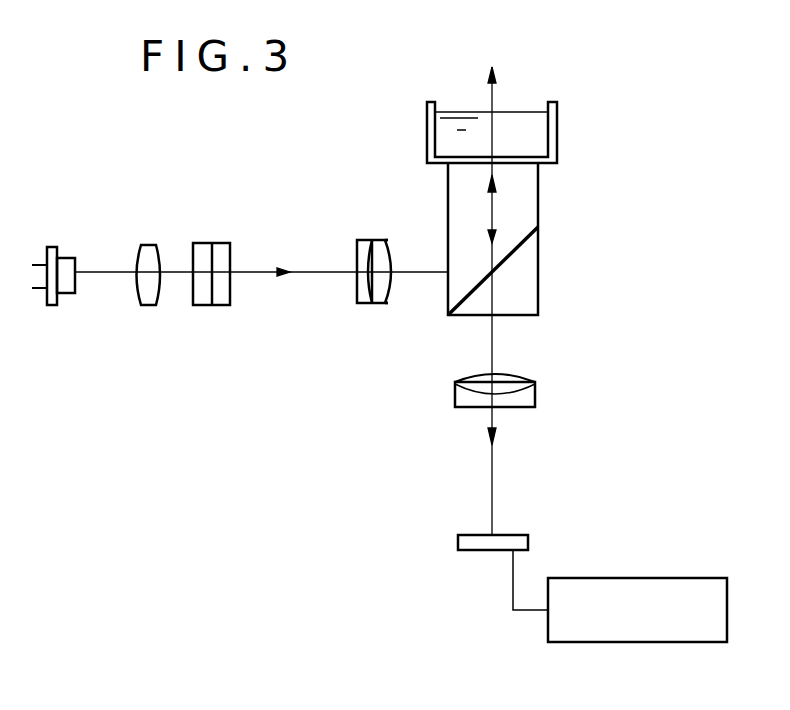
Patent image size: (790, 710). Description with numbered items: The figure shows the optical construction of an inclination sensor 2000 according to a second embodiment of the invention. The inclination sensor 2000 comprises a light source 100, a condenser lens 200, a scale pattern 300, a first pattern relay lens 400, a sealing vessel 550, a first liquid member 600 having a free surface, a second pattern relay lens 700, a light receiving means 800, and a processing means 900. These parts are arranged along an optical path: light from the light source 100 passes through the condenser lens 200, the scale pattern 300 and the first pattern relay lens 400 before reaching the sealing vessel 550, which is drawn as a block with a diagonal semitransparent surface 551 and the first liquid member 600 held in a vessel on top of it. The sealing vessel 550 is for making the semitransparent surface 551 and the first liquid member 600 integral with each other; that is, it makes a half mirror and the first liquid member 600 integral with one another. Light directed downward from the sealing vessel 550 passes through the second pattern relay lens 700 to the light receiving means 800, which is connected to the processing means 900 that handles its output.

The light source 100 is at (69, 257).
The condenser lens 200 is at (145, 244).
The scale pattern 300 is at (230, 290).
The first pattern relay lens 400 is at (370, 240).
The sealing vessel 550 is at (562, 243).
The semitransparent surface 551 is at (505, 262).
The first liquid member 600 is at (528, 112).
The second pattern relay lens 700 is at (535, 398).
The light receiving means 800 is at (517, 534).
The processing means 900 is at (673, 578).
The inclination sensor 2000 is at (308, 457).